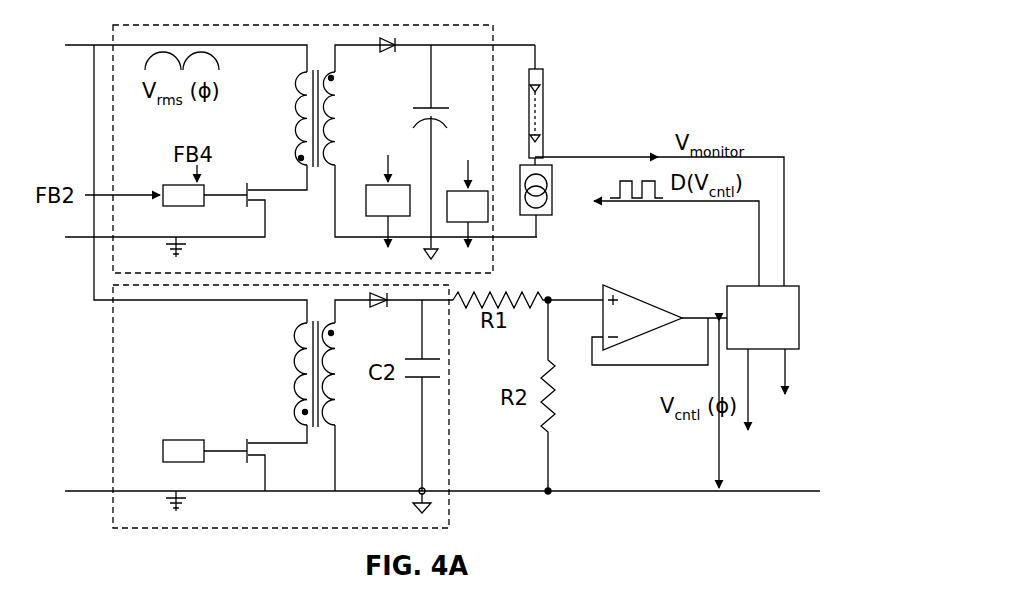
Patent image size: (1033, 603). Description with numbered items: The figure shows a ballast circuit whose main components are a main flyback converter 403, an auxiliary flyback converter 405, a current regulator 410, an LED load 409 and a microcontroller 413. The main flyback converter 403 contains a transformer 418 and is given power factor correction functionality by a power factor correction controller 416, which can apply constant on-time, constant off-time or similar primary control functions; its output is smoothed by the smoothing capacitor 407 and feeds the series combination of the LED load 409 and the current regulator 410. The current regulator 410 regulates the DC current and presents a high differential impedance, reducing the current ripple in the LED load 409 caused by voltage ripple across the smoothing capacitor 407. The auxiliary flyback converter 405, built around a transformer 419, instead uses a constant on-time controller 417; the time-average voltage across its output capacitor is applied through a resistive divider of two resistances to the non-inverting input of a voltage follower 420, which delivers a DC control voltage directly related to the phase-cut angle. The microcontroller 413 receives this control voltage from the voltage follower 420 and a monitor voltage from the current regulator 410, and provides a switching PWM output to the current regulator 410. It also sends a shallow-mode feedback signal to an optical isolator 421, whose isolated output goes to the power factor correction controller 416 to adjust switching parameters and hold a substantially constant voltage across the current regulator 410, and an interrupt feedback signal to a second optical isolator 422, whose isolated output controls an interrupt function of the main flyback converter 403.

The main flyback converter 403 is at (493, 250).
The auxiliary flyback converter 405 is at (450, 471).
The smoothing capacitor 407 is at (443, 112).
The LED load 409 is at (540, 108).
The current regulator 410 is at (551, 176).
The microcontroller 413 is at (799, 318).
The power factor correction controller 416 is at (165, 185).
The constant on-time controller 417 is at (185, 440).
The first transformer 418 is at (296, 97).
The second transformer 419 is at (312, 352).
The voltage follower 420 is at (643, 298).
The optical isolator 421 is at (366, 202).
The optical isolator 422 is at (483, 191).